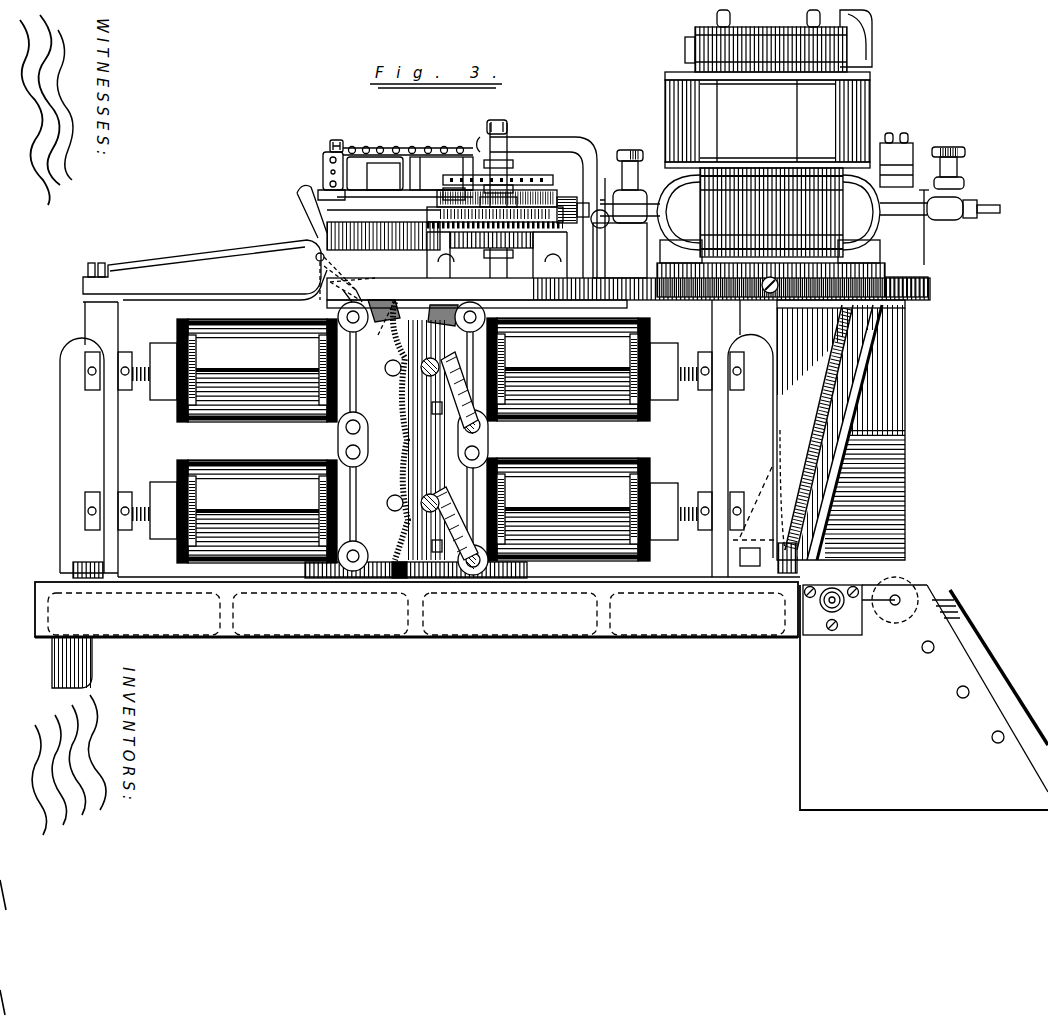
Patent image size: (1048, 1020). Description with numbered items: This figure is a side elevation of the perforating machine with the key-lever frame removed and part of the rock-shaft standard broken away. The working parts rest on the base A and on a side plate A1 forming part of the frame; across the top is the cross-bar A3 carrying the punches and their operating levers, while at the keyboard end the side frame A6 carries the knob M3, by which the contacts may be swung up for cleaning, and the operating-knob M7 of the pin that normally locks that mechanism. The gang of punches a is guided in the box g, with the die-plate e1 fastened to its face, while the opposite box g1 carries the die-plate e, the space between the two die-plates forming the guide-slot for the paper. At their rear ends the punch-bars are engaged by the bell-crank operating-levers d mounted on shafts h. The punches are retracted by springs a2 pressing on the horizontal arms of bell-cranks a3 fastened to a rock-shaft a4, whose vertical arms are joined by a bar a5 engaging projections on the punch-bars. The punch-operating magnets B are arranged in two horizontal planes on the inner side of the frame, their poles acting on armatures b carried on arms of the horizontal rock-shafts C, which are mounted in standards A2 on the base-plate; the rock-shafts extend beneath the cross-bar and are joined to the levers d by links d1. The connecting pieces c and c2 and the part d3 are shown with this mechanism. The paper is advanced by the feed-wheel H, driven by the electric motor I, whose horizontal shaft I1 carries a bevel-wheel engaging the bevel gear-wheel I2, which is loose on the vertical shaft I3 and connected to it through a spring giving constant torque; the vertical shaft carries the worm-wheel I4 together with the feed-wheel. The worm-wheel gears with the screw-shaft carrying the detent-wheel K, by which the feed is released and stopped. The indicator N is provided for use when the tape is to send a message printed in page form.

The base A is at (416, 635).
The side plate A1 is at (107, 340).
The standard A2 is at (522, 571).
The cross-bar A3 is at (221, 284).
The side frame A6 is at (924, 697).
The punch-operating magnet B is at (427, 440).
The armature b is at (449, 375).
The rock-shaft C is at (487, 318).
The link c is at (345, 428).
The pivot pin c2 is at (422, 500).
The feed-wheel H is at (531, 177).
The detent-wheel K is at (540, 191).
The electric motor I is at (828, 153).
The horizontal shaft I1 is at (660, 232).
The bevel gear-wheel I2 is at (540, 230).
The vertical shaft I3 is at (497, 276).
The worm-wheel I4 is at (452, 200).
The knob M3 is at (898, 583).
The operating-knob M7 is at (831, 612).
The indicator N is at (841, 430).
The punch a is at (395, 199).
The retracting spring a2 is at (334, 146).
The bell-crank a3 is at (326, 170).
The rock-shaft a4 is at (324, 157).
The bar a5 is at (331, 190).
The guide-box g is at (398, 170).
The guide-box g1 is at (420, 170).
The die-plate e is at (383, 176).
The die-plate e1 is at (450, 193).
The operating-lever d is at (310, 216).
The link d1 is at (337, 284).
The spring wire d3 is at (394, 419).
The shaft h is at (313, 257).